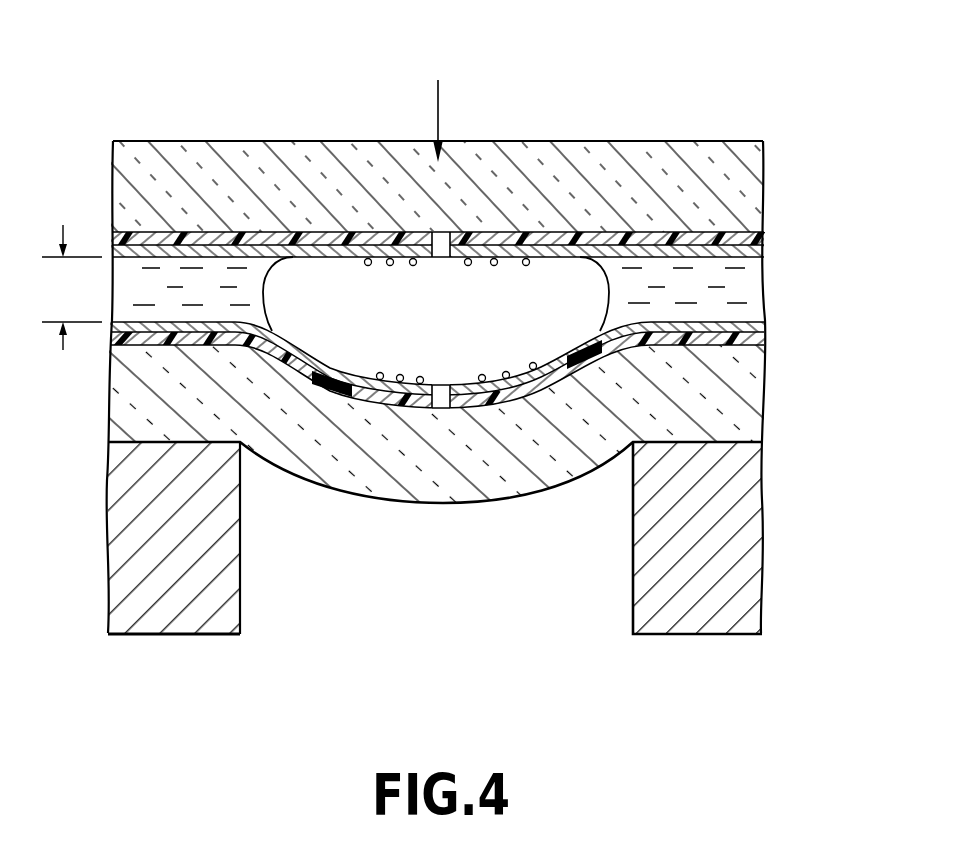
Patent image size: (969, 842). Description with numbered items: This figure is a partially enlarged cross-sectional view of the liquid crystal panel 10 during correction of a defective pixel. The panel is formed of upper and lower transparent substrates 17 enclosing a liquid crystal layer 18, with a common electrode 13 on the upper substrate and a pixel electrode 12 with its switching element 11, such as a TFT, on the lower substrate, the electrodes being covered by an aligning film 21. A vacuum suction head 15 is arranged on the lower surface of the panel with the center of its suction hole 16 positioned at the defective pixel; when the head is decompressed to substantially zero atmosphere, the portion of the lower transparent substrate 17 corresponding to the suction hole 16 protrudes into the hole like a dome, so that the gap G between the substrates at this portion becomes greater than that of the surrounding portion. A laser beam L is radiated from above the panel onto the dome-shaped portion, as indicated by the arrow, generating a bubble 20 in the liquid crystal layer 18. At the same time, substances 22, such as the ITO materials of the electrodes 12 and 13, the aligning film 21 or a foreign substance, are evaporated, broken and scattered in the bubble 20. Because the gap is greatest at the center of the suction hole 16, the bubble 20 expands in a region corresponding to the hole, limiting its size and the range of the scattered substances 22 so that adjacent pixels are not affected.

The liquid crystal panel 10 is at (183, 134).
The switching element 11 is at (328, 395).
The pixel electrode 12 is at (490, 400).
The common electrode 13 is at (750, 233).
The vacuum suction head 15 is at (128, 559).
The suction hole 16 is at (240, 598).
The transparent substrate 17 is at (704, 155).
The liquid crystal layer 18 is at (160, 262).
The bubble 20 is at (607, 289).
The aligning film 21 is at (750, 318).
The substances 22 is at (491, 247).
The light beam L is at (438, 103).
The gap height G is at (65, 287).